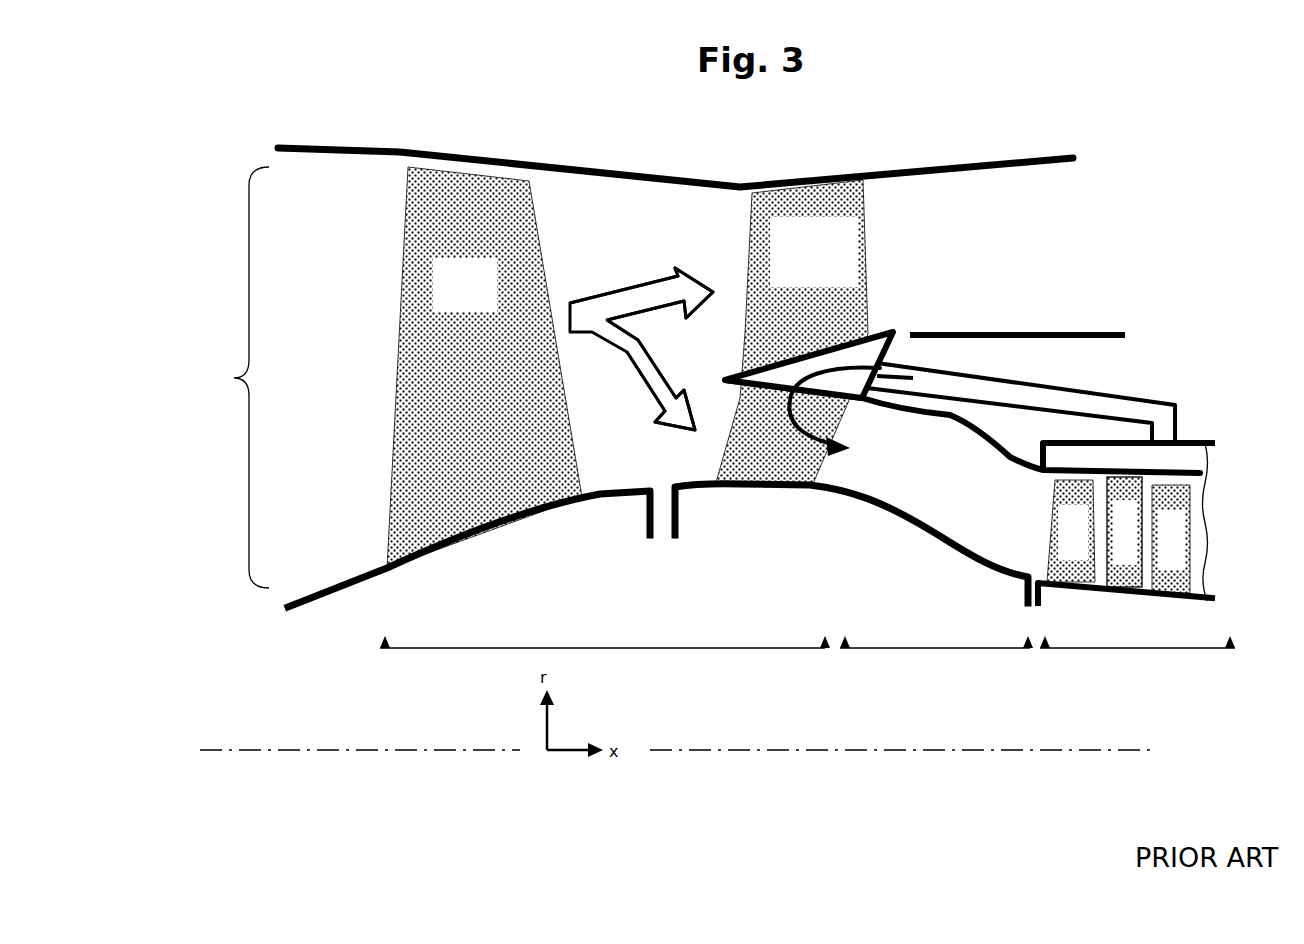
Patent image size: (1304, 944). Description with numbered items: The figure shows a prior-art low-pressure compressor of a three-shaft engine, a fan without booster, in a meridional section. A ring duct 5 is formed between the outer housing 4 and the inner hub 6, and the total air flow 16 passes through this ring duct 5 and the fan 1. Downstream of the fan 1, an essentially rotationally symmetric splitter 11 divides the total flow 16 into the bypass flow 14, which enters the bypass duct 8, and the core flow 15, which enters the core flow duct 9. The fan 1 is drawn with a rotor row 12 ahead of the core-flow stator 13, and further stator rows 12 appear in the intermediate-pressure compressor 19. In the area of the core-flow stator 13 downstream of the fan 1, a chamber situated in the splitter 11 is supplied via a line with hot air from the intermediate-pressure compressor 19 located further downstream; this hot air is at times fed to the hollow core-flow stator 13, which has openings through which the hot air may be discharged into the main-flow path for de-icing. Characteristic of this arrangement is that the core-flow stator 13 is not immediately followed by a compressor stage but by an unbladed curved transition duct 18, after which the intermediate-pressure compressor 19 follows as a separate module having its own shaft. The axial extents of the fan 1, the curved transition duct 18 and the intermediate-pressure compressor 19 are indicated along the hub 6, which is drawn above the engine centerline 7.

The fan 1 is at (613, 648).
The housing 4 is at (332, 148).
The ring duct 5 is at (233, 377).
The hub 6 is at (304, 610).
The engine axis 7 is at (780, 752).
The bypass duct 8 is at (1017, 268).
The core flow duct 9 is at (902, 470).
The splitter 11 is at (857, 350).
The stator vane rows 12 is at (500, 237).
The core-flow stator 13 is at (827, 194).
The bypass flow 14 is at (648, 303).
The core flow 15 is at (660, 393).
The total air flow 16 is at (592, 322).
The curved transition duct 18 is at (892, 647).
The intermediate-pressure compressor 19 is at (1135, 647).